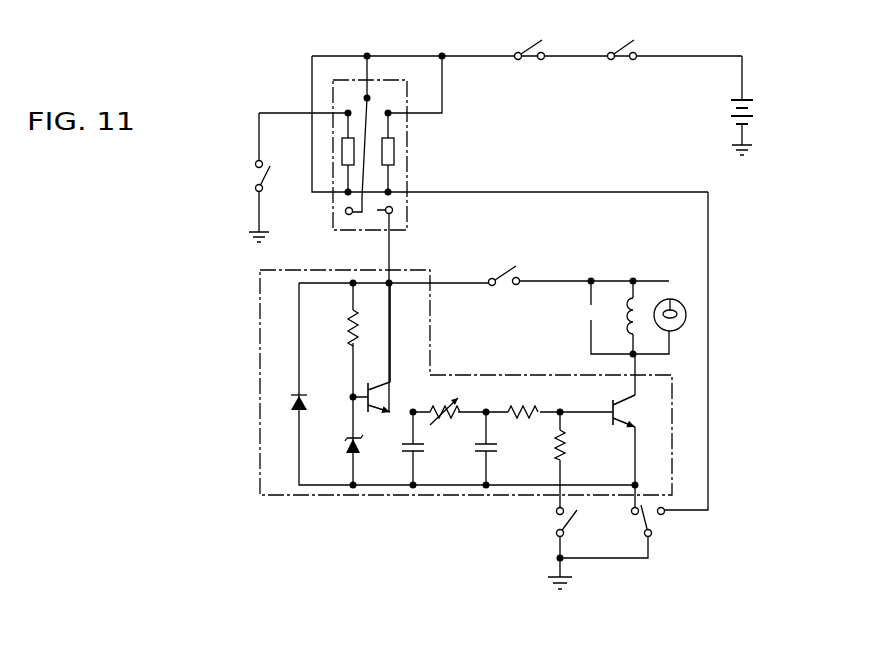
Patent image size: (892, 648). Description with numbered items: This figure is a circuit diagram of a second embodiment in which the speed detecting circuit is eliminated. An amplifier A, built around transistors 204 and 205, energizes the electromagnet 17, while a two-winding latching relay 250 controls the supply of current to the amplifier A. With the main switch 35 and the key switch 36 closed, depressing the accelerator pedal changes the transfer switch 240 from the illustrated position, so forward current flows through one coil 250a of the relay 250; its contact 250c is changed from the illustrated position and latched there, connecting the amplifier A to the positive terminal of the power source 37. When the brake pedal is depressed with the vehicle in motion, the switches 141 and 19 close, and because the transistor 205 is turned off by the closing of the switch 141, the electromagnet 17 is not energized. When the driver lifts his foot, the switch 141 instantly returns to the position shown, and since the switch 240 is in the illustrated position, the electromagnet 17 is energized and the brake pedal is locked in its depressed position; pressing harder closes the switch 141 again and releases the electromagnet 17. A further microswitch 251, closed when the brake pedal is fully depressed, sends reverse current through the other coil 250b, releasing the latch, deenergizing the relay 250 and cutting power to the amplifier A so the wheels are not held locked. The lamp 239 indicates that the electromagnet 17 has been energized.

The main switch 35 is at (535, 42).
The key switch 36 is at (627, 42).
The power source 37 is at (734, 110).
The microswitch 251 is at (255, 180).
The two-winding latching relay 250 is at (407, 124).
The coil 250a is at (394, 158).
The coil 250b is at (348, 160).
The contact 250c is at (392, 207).
The switch 19 is at (510, 268).
The electromagnet 17 is at (628, 331).
The lamp 239 is at (687, 312).
The amplifier A is at (430, 355).
The transistor 204 is at (379, 395).
The transistor 205 is at (618, 428).
The switch 141 is at (555, 522).
The transfer switch 240 is at (652, 520).